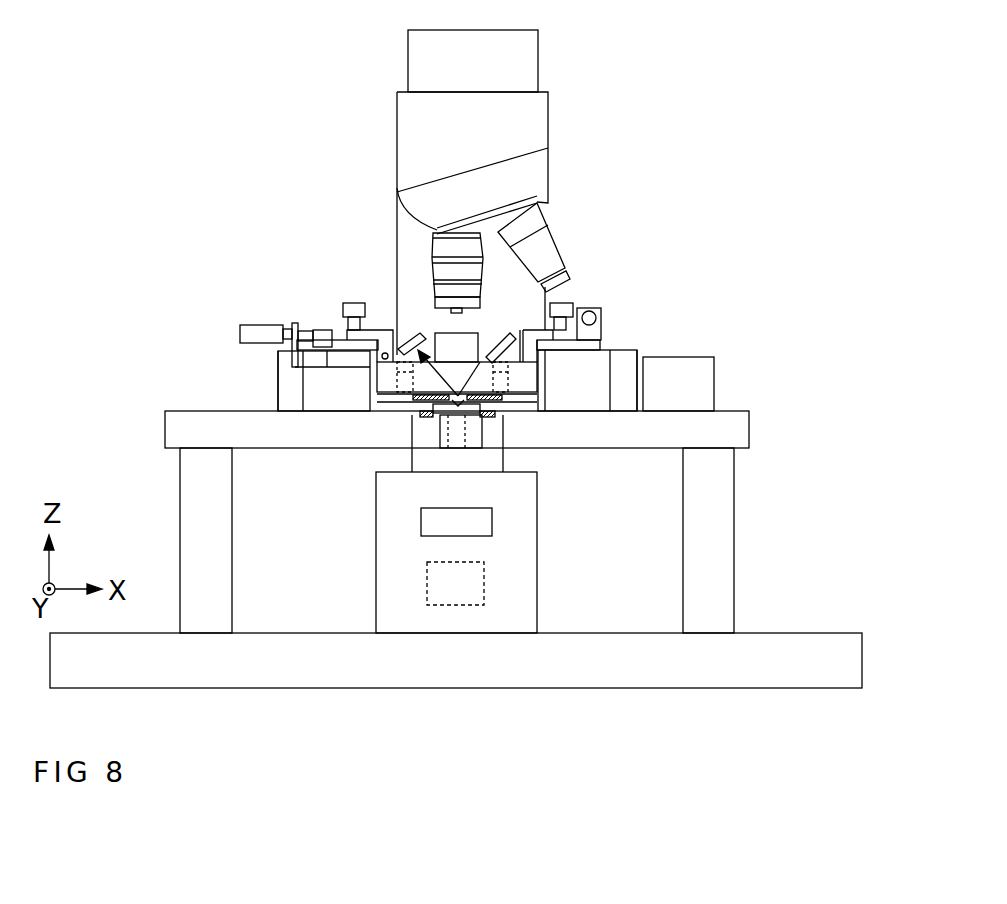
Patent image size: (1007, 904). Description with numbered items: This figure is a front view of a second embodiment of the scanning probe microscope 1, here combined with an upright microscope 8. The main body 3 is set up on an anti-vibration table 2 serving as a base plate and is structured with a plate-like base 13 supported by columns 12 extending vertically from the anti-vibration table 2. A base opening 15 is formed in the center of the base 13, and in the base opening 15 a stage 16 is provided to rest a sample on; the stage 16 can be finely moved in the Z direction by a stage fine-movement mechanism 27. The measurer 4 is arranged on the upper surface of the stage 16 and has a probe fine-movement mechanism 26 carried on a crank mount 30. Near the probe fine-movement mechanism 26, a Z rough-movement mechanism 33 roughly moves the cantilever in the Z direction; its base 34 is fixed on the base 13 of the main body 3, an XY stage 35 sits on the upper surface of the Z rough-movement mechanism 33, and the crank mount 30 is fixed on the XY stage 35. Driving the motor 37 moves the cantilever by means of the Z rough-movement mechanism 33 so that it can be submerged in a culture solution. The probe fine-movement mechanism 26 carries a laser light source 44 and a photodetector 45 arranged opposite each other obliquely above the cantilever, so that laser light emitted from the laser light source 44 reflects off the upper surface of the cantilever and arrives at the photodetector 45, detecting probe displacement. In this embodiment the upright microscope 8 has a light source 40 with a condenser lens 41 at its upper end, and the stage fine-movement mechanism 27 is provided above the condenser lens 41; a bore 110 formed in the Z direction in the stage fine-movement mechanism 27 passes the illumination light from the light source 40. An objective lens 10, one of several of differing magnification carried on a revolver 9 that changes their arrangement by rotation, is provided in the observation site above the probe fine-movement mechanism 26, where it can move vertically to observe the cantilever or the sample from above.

The scanning probe microscope 1 is at (718, 66).
The anti-vibration table 2 is at (797, 633).
The main body 3 is at (768, 490).
The measurer 4 is at (768, 376).
The upright microscope 8 is at (560, 523).
The revolver 9 is at (523, 212).
The objective lens 10 is at (433, 312).
The columns 12 is at (180, 508).
The base 13 is at (743, 428).
The base opening 15 is at (403, 408).
The stage 16 is at (403, 420).
The probe fine-movement mechanism 26 is at (514, 338).
The stage fine-movement mechanism 27 is at (427, 437).
The crank mount 30 is at (350, 330).
The Z rough-movement mechanism 33 is at (313, 386).
The base 34 is at (288, 397).
The XY stage 35 is at (337, 347).
The motor 37 is at (690, 375).
The light source 40 is at (428, 580).
The condenser lens 41 is at (432, 520).
The laser light source 44 is at (510, 338).
The photodetector 45 is at (400, 345).
The bore 110 is at (458, 444).